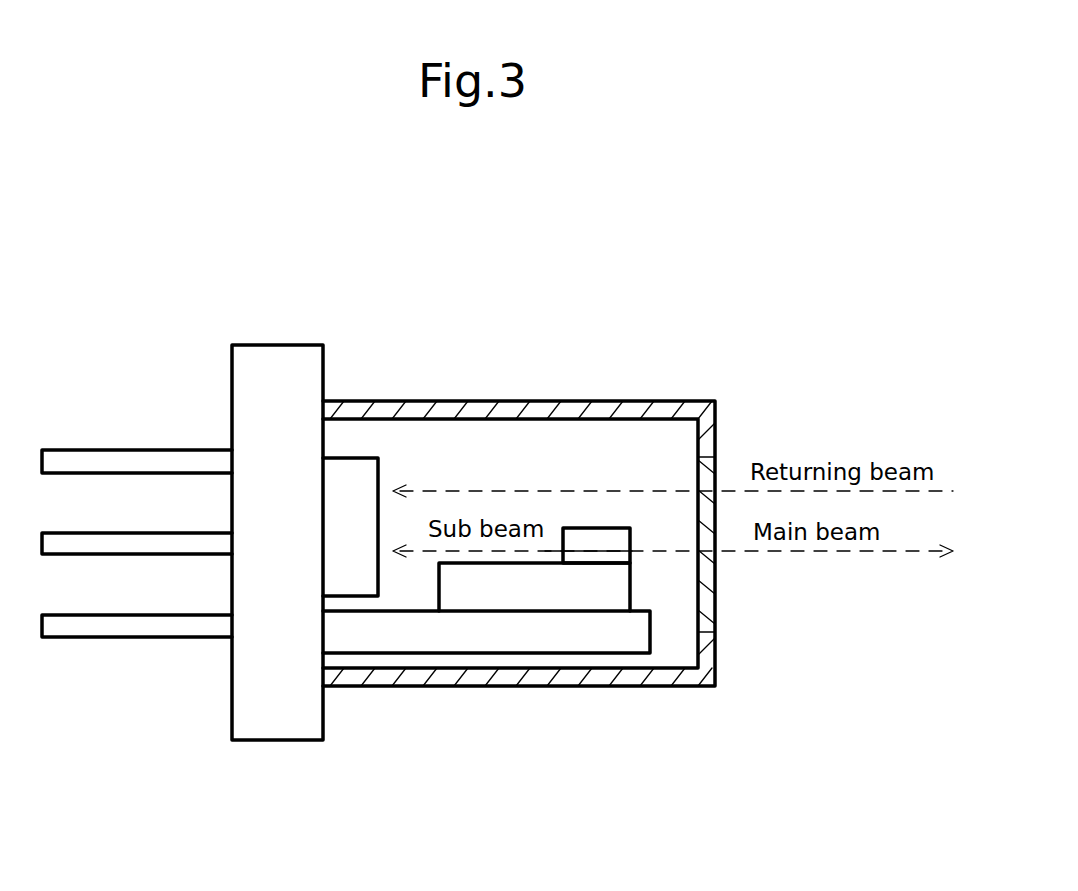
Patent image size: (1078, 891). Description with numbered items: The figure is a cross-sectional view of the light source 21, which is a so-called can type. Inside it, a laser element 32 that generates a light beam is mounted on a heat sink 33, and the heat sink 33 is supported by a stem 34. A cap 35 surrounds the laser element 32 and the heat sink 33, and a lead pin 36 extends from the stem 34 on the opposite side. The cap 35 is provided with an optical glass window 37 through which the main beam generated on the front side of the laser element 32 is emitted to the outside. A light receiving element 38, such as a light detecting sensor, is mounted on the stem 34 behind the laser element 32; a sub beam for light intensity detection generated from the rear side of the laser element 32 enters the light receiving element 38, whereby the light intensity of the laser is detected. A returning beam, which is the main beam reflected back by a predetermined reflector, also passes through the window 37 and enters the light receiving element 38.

The light source 21 is at (702, 359).
The laser element 32 is at (596, 528).
The heat sink 33 is at (557, 612).
The stem 34 is at (272, 742).
The cap 35 is at (478, 401).
The lead pin 36 is at (127, 450).
The optical glass window 37 is at (708, 468).
The light receiving element 38 is at (371, 457).